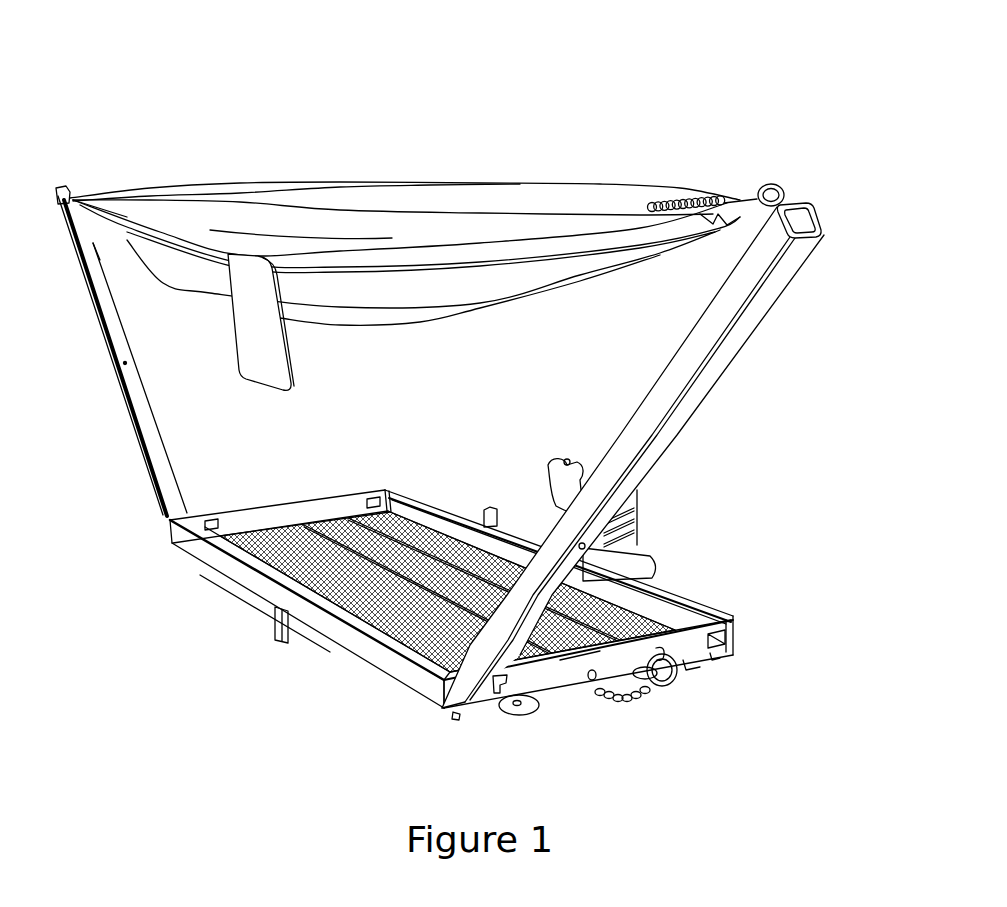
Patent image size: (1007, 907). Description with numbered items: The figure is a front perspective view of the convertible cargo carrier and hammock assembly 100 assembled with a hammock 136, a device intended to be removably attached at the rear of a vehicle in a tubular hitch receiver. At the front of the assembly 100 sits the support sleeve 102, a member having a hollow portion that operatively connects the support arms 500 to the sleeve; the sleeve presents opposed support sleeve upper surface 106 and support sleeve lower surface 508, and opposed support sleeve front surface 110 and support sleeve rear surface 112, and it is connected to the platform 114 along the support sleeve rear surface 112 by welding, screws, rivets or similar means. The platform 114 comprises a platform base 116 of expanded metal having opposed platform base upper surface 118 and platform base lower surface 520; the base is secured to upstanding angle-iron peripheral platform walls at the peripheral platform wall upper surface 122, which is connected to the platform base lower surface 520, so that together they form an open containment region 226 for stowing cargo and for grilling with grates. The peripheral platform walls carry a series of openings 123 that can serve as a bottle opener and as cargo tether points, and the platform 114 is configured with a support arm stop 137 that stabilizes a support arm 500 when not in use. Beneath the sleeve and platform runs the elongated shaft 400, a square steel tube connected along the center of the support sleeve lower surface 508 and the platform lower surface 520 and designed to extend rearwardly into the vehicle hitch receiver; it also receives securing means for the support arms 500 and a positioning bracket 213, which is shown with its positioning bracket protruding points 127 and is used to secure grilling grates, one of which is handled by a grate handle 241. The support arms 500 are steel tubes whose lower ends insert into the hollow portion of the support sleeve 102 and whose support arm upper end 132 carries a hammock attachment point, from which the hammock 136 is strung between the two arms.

The convertible cargo carrier and hammock assembly 100 is at (652, 93).
The support sleeve 102 is at (210, 558).
The support sleeve upper surface 106 is at (273, 637).
The support sleeve lower surface 508 is at (347, 617).
The support sleeve front surface 110 is at (405, 718).
The support sleeve rear surface 112 is at (410, 682).
The platform 114 is at (445, 508).
The platform base 116 is at (622, 622).
The platform base upper surface 118 is at (372, 467).
The platform base lower surface 520 is at (393, 497).
The peripheral platform wall upper surface 122 is at (567, 668).
The openings 123 is at (497, 695).
The positioning bracket protruding points 127 is at (562, 459).
The support arm upper end 132 is at (782, 263).
The hammock 136 is at (413, 183).
The support arm stop 137 is at (491, 508).
The positioning bracket 213 is at (574, 460).
The open containment region 226 is at (285, 515).
The grate handle 241 is at (525, 714).
The elongated shaft 400 is at (652, 548).
The support arms 500 is at (712, 363).